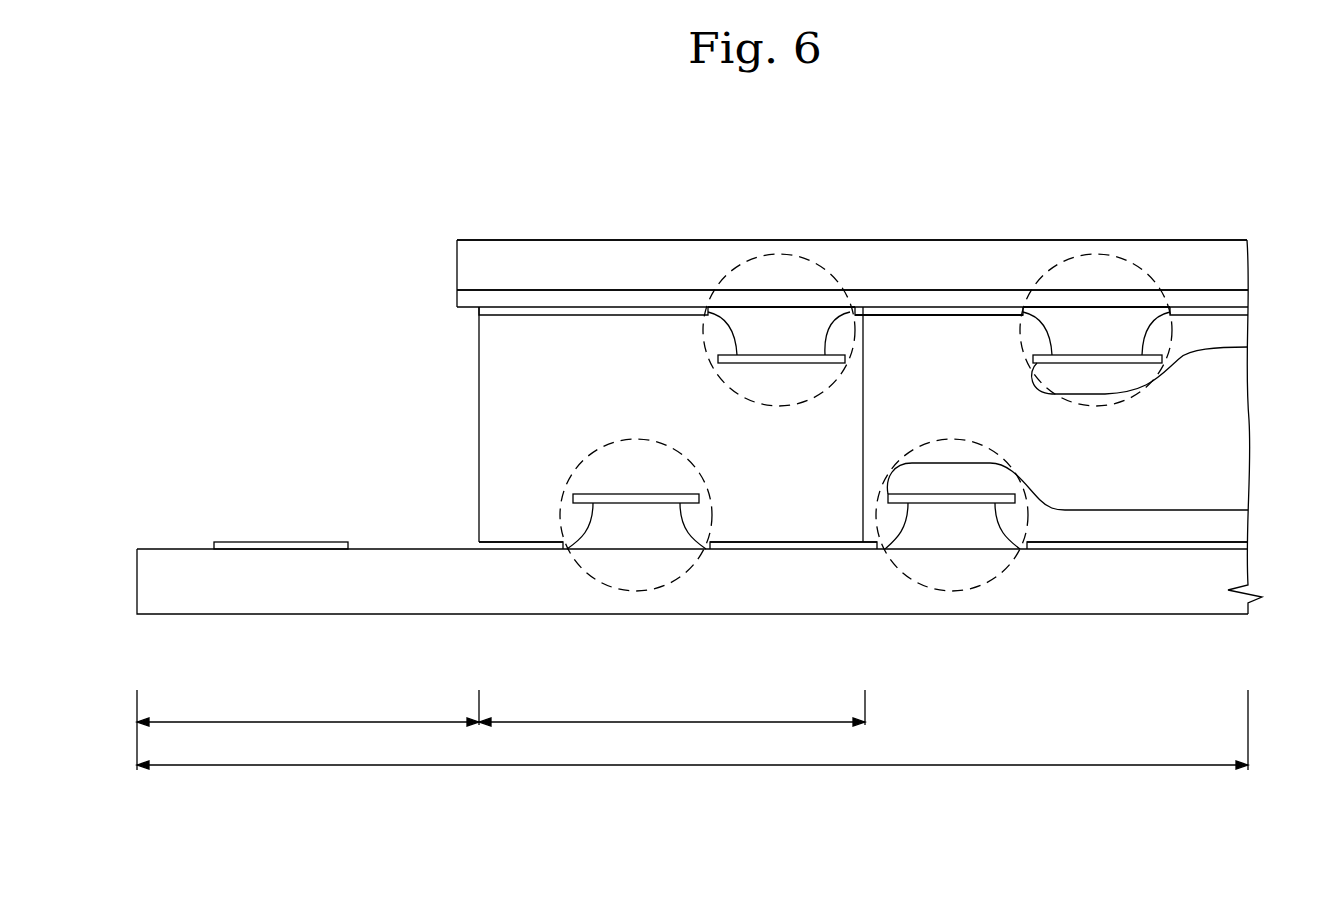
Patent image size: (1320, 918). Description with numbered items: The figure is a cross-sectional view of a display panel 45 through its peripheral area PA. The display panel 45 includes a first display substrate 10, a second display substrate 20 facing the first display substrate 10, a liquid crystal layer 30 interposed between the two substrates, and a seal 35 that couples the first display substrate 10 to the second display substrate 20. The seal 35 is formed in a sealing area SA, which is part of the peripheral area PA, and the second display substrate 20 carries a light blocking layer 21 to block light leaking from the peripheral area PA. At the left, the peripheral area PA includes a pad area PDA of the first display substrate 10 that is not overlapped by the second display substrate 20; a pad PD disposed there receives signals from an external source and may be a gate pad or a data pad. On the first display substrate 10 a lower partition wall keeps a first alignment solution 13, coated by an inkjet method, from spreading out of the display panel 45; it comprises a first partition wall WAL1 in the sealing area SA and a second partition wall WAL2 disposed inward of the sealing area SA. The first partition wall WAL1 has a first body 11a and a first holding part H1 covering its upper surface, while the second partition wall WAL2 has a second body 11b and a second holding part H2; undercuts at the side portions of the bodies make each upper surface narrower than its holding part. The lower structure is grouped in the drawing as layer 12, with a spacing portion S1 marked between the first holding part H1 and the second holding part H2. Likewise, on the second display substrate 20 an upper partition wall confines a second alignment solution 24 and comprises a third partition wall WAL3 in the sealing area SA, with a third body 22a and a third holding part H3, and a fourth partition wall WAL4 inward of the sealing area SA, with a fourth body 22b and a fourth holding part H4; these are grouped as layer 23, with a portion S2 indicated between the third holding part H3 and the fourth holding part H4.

The second display substrate 20 is at (1232, 270).
The light blocking layer 21 is at (1232, 302).
The second alignment solution 24 is at (1232, 335).
The liquid crystal layer 30 is at (1240, 407).
The first alignment solution 13 is at (1240, 529).
The first display substrate 10 is at (1240, 577).
The seal 35 is at (490, 413).
The pad PD is at (287, 545).
The third partition wall WAL3 is at (742, 262).
The third body 22a is at (783, 318).
The upper conductive layer 23 is at (973, 183).
The third holding part H3 is at (803, 353).
The second spacer portion S2 is at (938, 312).
The fourth holding part H4 is at (1061, 360).
The fourth partition wall WAL4 is at (1057, 262).
The fourth body 22b is at (1098, 320).
The display panel 45 is at (1201, 230).
The first partition wall WAL1 is at (610, 590).
The first body 11a is at (644, 549).
The first holding part H1 is at (673, 549).
The first spacer portion S1 is at (802, 549).
The second holding part H2 is at (905, 552).
The second partition wall WAL2 is at (925, 587).
The second body 11b is at (948, 549).
The lower conductive layer 12 is at (843, 673).
The pad area PDA is at (308, 730).
The sealing area SA is at (672, 720).
The peripheral area PA is at (692, 742).